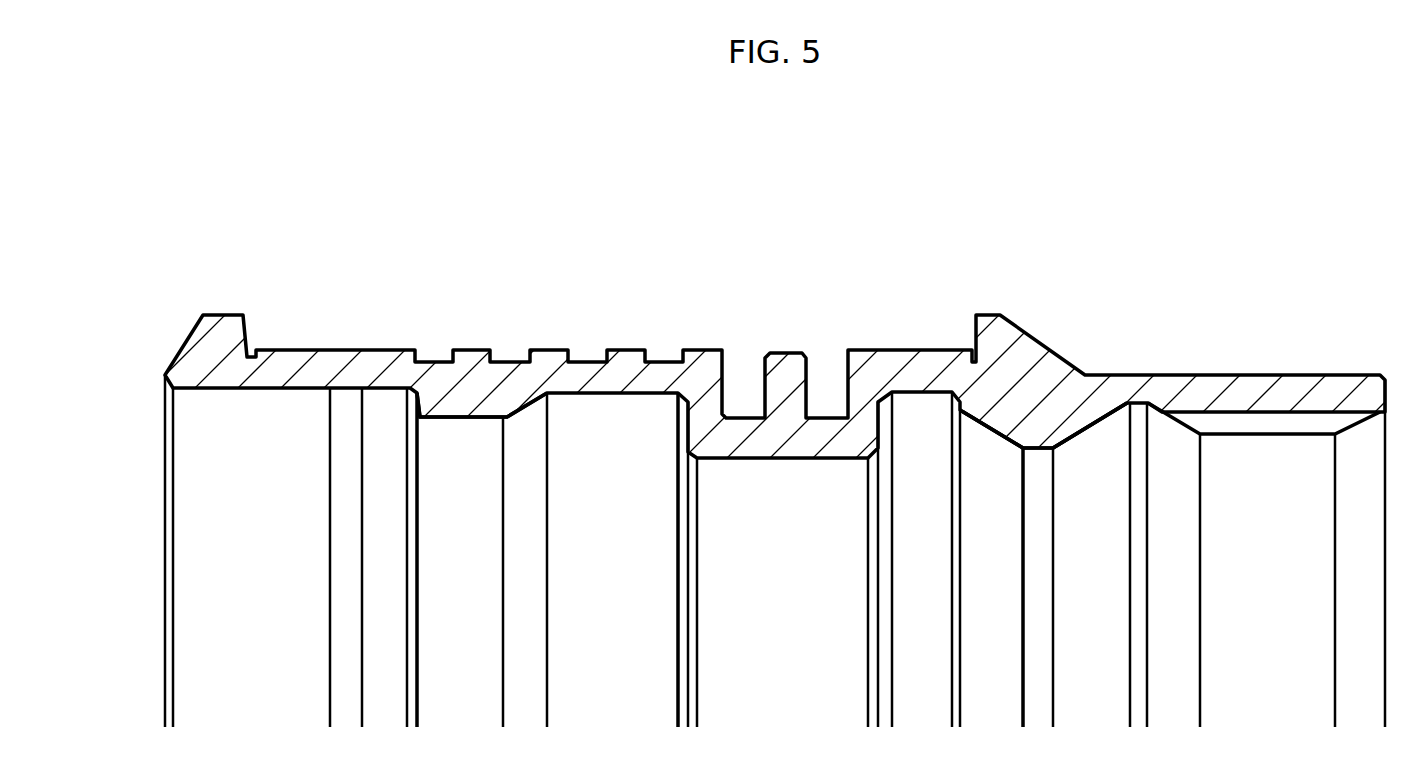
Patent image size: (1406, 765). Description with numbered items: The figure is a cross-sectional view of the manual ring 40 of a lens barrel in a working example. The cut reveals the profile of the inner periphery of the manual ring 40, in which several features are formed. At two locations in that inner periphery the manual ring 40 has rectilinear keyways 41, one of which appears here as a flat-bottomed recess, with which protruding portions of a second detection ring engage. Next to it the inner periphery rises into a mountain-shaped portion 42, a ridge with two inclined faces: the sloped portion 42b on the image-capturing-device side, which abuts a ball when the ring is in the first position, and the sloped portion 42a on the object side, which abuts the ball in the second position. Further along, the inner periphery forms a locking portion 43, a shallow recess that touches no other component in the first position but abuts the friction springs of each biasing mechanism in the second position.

The manual ring 40 is at (700, 372).
The rectilinear keyway 41 is at (1270, 425).
The mountain-shaped portion 42 is at (1053, 487).
The sloped portion 42a is at (995, 425).
The sloped portion 42b is at (1105, 425).
The locking portion 43 is at (458, 405).